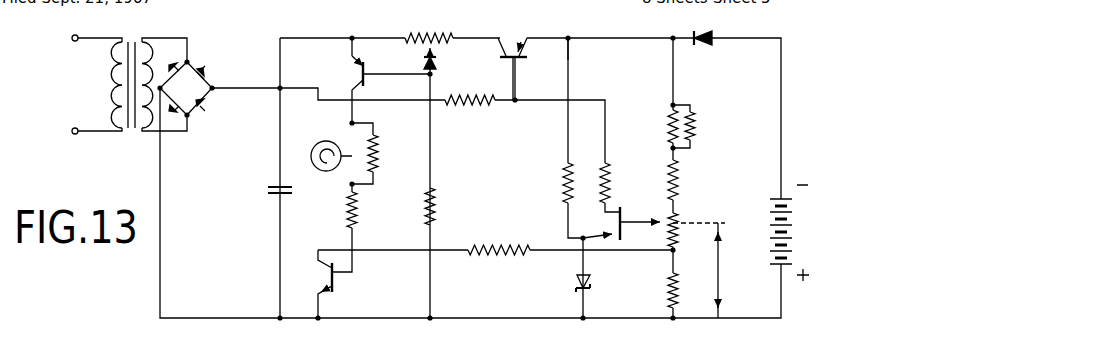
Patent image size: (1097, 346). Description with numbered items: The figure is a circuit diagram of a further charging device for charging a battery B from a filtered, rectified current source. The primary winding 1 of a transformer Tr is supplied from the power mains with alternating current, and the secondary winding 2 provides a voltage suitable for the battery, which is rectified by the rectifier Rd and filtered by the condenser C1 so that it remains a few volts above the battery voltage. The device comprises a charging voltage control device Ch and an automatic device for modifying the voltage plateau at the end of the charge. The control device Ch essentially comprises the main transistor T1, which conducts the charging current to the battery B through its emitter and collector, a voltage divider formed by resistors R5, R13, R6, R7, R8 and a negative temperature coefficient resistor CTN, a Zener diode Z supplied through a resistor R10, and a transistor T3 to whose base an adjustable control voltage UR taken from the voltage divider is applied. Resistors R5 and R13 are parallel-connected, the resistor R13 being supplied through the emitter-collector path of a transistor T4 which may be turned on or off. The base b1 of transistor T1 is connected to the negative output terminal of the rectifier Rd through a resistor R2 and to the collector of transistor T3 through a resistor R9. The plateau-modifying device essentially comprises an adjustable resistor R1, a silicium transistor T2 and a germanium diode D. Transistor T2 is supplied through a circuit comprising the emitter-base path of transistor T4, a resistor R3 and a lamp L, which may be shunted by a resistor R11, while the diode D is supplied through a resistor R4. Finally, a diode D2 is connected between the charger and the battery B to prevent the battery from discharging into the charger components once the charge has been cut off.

The transformer Tr is at (129, 104).
The primary winding 1 is at (118, 80).
The secondary winding 2 is at (148, 62).
The rectifier Rd is at (200, 75).
The condenser C1 is at (268, 200).
The silicium transistor T2 is at (358, 77).
The adjustable resistor R1 is at (420, 32).
The germanium diode D is at (436, 58).
The main transistor T1 is at (510, 43).
The base of transistor T1 b1 is at (519, 58).
The charging voltage control device Ch is at (586, 36).
The diode D2 is at (702, 33).
The resistor R2 is at (463, 105).
The lamp L is at (325, 140).
The resistor R11 is at (377, 160).
The resistor R3 is at (358, 214).
The resistor R4 is at (436, 204).
The transistor T4 is at (327, 276).
The resistor R13 is at (500, 258).
The resistor R10 is at (563, 182).
The resistor R9 is at (611, 188).
The transistor T3 is at (622, 216).
The resistor R8 is at (668, 128).
The negative temperature coefficient resistor CTN is at (696, 124).
The resistor R7 is at (680, 175).
The resistor R6 is at (680, 220).
The resistor R5 is at (668, 294).
The Zener diode Z is at (577, 282).
The adjustable control voltage UR is at (700, 270).
The battery B is at (790, 234).